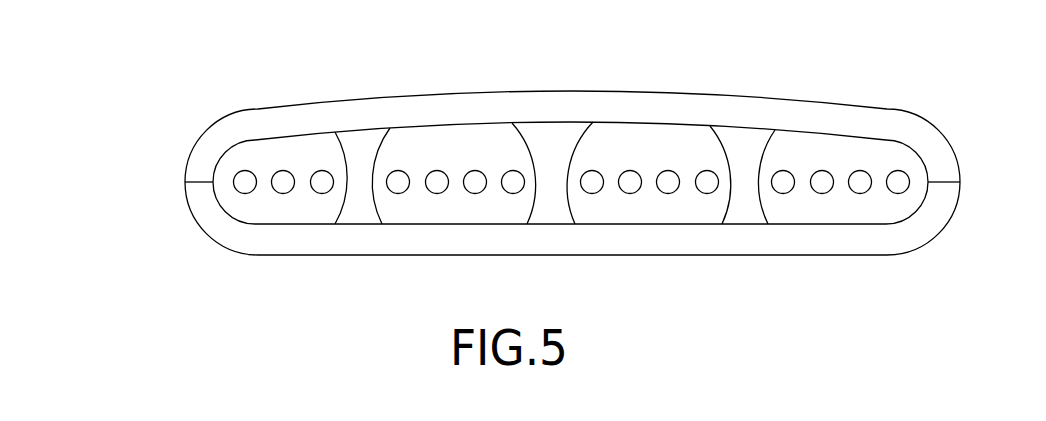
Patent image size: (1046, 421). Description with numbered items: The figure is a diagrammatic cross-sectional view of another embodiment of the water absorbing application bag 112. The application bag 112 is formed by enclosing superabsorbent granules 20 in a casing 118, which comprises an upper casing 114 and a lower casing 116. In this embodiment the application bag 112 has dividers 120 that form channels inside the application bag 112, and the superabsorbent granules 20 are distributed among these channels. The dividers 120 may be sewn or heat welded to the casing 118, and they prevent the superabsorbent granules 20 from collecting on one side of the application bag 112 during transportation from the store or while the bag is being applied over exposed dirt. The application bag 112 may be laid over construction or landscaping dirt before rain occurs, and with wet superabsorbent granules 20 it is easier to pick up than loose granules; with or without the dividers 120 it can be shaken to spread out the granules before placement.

The water absorbing application bag 112 is at (460, 61).
The upper casing 114 is at (203, 157).
The lower casing 116 is at (212, 221).
The casing 118 is at (107, 90).
The superabsorbent granules 20 is at (438, 183).
The dividers 120 is at (743, 198).